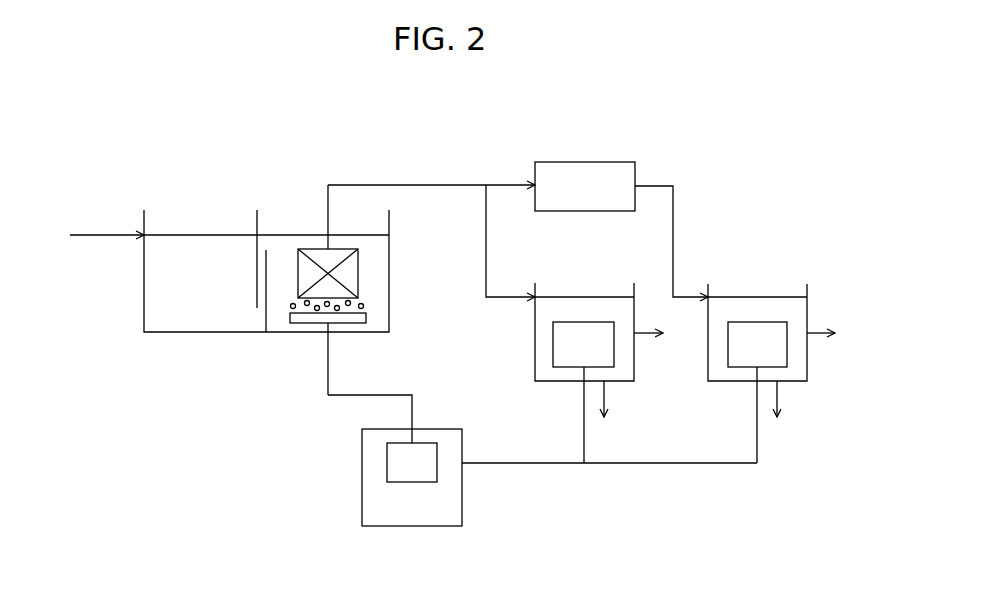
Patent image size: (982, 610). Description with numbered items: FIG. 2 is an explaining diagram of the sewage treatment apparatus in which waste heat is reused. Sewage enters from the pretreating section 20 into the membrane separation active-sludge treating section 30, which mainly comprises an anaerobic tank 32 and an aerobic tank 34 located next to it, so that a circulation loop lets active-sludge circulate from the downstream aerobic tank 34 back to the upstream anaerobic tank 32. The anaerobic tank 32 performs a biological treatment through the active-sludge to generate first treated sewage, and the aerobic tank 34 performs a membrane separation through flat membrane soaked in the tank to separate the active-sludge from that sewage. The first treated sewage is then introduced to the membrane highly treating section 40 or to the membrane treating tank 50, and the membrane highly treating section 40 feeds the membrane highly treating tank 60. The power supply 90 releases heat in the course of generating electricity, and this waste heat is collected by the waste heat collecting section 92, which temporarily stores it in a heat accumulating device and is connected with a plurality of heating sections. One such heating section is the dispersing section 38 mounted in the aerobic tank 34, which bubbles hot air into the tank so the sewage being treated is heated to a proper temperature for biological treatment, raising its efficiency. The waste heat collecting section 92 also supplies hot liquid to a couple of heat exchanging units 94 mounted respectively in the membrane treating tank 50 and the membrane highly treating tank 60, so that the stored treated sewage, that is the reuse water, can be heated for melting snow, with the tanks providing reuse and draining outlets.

The pretreating section 20 is at (93, 235).
The membrane separation active-sludge treating section 30 is at (268, 253).
The anaerobic tank 32 is at (160, 302).
The aerobic tank 34 is at (372, 272).
The dispersing section 38 is at (310, 330).
The membrane highly treating section 40 is at (583, 162).
The membrane treating tank 50 is at (536, 337).
The membrane highly treating tank 60 is at (808, 301).
The power supply 90 is at (382, 512).
The waste heat collecting section 92 is at (398, 459).
The heat exchanging unit 94 is at (670, 344).